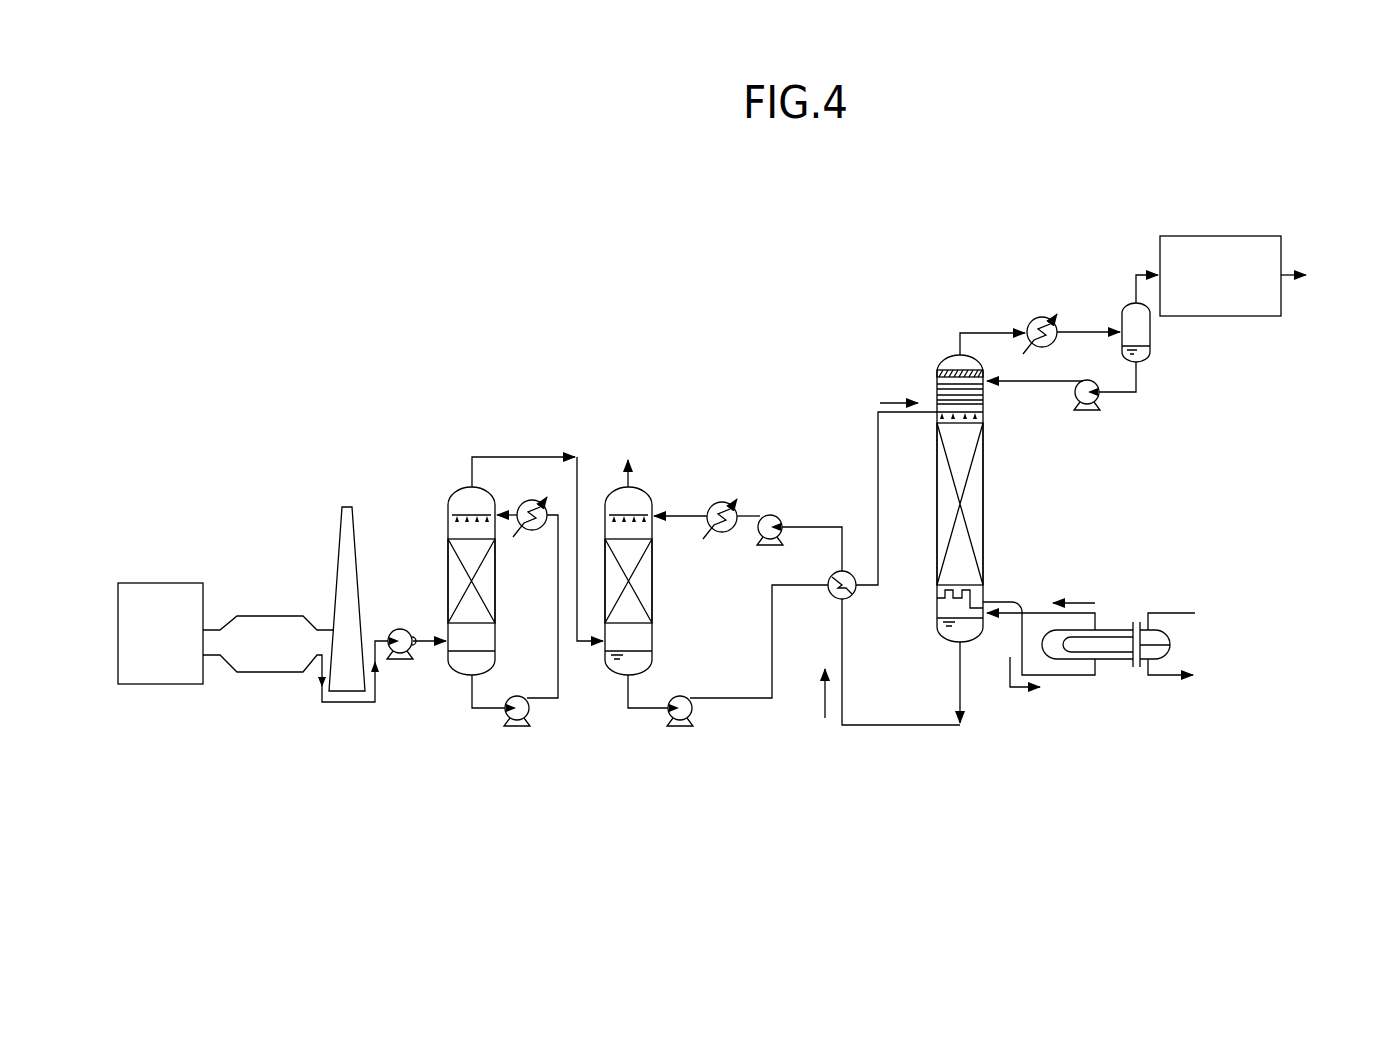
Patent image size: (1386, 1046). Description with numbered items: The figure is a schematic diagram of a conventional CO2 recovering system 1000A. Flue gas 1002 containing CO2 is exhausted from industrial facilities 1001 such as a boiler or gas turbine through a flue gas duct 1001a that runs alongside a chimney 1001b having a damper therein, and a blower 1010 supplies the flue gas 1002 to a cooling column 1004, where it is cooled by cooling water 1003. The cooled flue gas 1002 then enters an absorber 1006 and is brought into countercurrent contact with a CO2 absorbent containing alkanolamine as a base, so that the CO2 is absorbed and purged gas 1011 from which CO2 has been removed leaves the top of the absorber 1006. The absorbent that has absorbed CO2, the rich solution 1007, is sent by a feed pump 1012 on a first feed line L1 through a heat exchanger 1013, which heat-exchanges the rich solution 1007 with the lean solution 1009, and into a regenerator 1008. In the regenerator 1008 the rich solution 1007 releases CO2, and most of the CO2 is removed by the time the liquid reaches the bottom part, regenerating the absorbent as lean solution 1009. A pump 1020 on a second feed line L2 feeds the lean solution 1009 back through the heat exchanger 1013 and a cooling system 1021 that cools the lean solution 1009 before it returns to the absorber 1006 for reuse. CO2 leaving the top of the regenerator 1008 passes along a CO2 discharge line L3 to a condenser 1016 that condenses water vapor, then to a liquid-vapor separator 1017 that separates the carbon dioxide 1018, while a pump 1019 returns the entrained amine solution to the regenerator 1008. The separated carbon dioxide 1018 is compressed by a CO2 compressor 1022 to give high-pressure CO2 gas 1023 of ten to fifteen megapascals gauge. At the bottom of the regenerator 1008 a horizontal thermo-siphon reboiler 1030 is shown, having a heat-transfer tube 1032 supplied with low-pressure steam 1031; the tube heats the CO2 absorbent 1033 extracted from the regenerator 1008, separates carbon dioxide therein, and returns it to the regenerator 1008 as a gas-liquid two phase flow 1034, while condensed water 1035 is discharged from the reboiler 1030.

The CO2 recovering system 1000A is at (606, 290).
The industrial facilities 1001 is at (182, 583).
The flue gas duct 1001a is at (270, 673).
The chimney 1001b is at (340, 541).
The flue gas 1002 is at (480, 455).
The cooling water 1003 is at (510, 518).
The cooling column 1004 is at (451, 528).
The absorber 1006 is at (638, 484).
The rich solution 1007 is at (893, 400).
The regenerator 1008 is at (950, 356).
The lean solution 1009 is at (820, 703).
The blower 1010 is at (398, 662).
The purged gas 1011 is at (578, 516).
The feed pump 1012 is at (678, 728).
The heat exchanger 1013 is at (837, 602).
The condenser 1016 is at (1037, 318).
The liquid-vapor separator 1017 is at (1150, 337).
The carbon dioxide 1018 is at (1152, 272).
The pump 1019 is at (1100, 397).
The pump 1020 is at (780, 513).
The cooling system 1021 is at (722, 532).
The CO2 compressor 1022 is at (1203, 236).
The high-pressure CO2 gas 1023 is at (1319, 278).
The horizontal thermo-siphon reboiler 1030 is at (1076, 671).
The low-pressure steam 1031 is at (1197, 615).
The heat-transfer tube 1032 is at (1072, 653).
The CO2 absorbent 1033 is at (1018, 690).
The gas-liquid two phase flow 1034 is at (1075, 602).
The condensed water 1035 is at (1197, 672).
The first feed line L1 is at (755, 699).
The second feed line L2 is at (893, 723).
The CO2 discharge line L3 is at (983, 332).